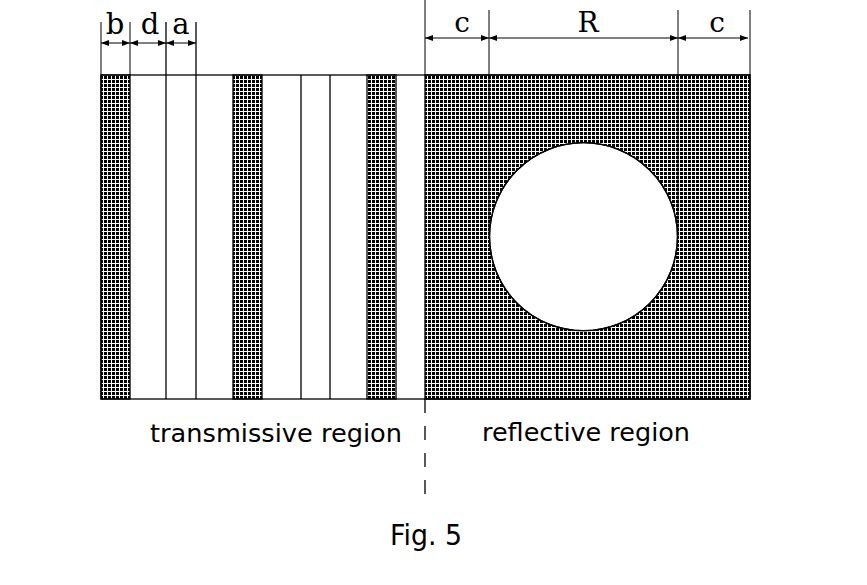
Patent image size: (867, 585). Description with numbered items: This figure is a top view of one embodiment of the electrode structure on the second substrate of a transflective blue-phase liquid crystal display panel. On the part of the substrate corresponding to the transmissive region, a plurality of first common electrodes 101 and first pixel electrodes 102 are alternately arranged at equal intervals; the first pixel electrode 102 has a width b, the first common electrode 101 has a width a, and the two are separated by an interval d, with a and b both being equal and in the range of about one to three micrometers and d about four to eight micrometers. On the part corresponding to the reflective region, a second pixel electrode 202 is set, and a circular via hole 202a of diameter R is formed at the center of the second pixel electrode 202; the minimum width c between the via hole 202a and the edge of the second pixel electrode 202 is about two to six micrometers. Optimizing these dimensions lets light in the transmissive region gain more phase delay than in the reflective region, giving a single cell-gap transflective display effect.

The first common electrode 101 is at (183, 322).
The first pixel electrode 102 is at (113, 145).
The second pixel electrode 202 is at (708, 129).
The via hole 202a is at (624, 226).